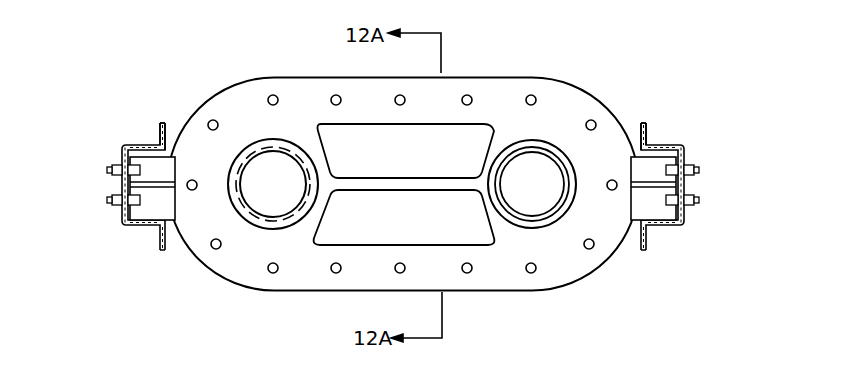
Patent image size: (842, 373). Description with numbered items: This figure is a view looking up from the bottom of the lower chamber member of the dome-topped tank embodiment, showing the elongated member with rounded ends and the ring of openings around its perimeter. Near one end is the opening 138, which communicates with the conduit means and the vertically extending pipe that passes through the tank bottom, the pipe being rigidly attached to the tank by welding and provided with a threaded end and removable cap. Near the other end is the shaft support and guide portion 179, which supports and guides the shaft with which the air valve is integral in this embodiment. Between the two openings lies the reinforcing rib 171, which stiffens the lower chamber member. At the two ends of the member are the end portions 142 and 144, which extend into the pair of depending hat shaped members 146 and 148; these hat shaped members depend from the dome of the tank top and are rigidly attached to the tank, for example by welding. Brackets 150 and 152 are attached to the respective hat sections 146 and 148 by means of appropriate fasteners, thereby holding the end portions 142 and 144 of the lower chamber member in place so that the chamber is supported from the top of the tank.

The opening 138 is at (533, 157).
The end portion 142 is at (642, 217).
The end portion 144 is at (167, 218).
The depending hat shaped member 146 is at (647, 130).
The depending hat shaped member 148 is at (128, 150).
The bracket 150 is at (653, 197).
The bracket 152 is at (155, 197).
The reinforcing rib 171 is at (395, 182).
The shaft support and guide portion 179 is at (252, 223).